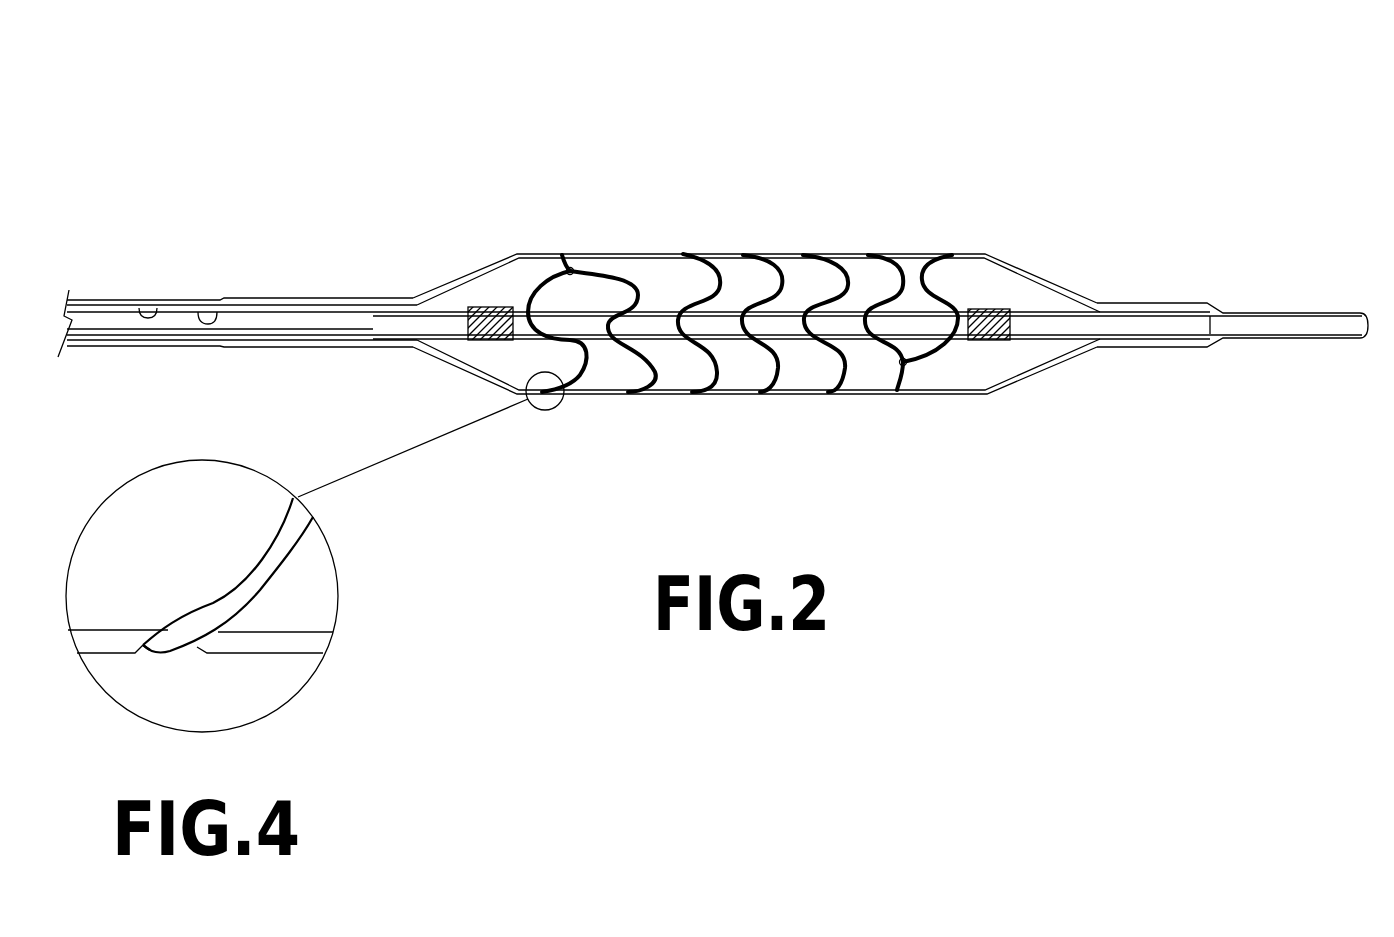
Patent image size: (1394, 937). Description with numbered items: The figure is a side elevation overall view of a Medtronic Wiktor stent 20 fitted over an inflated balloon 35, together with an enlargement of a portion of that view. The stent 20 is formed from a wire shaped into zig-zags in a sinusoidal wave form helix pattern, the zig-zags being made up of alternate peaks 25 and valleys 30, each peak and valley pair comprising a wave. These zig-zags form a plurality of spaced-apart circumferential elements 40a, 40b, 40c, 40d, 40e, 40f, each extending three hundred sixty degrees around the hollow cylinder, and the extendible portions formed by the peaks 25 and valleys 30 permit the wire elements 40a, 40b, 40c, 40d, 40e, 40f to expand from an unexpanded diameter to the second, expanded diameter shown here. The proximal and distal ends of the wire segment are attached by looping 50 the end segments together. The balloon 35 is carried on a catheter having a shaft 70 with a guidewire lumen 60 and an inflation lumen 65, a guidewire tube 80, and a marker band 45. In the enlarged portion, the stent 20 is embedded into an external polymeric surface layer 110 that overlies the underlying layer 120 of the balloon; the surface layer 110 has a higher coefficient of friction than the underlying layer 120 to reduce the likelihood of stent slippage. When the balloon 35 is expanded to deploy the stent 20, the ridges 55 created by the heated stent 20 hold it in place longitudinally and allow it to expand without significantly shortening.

In FIG. 2, the stent 20 is at (740, 264).
In FIG. 4, the stent 20 is at (265, 567).
In FIG. 2, the peak 25 is at (606, 333).
In FIG. 2, the valley 30 is at (645, 295).
In FIG. 2, the balloon 35 is at (839, 255).
In FIG. 2, the element 40a is at (552, 392).
In FIG. 2, the element 40b is at (633, 394).
In FIG. 2, the element 40c is at (701, 394).
In FIG. 2, the element 40d is at (765, 394).
In FIG. 2, the element 40e is at (829, 394).
In FIG. 2, the element 40f is at (891, 394).
In FIG. 2, the marker band 45 is at (488, 307).
In FIG. 2, the end loop 50 is at (569, 265).
In FIG. 4, the ridges 55 is at (152, 652).
In FIG. 2, the guidewire lumen 60 is at (198, 312).
In FIG. 2, the inflation lumen 65 is at (139, 308).
In FIG. 2, the shaft 70 is at (87, 303).
In FIG. 2, the guidewire tube 80 is at (380, 312).
In FIG. 4, the polymeric surface layer 110 is at (97, 643).
In FIG. 4, the underlying layer 120 is at (172, 523).